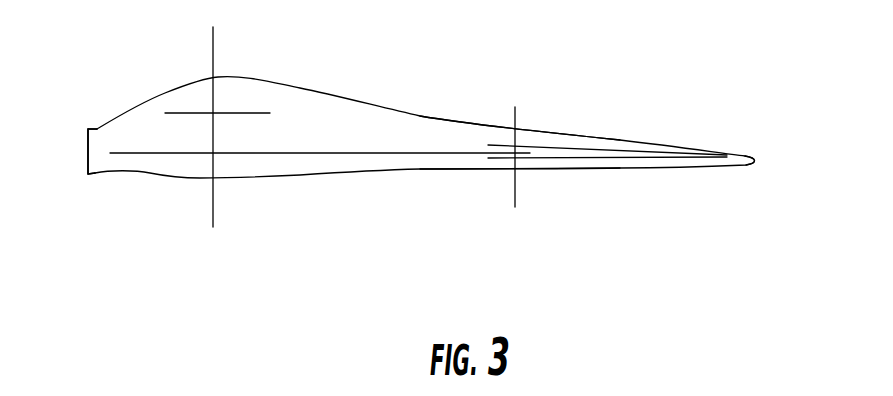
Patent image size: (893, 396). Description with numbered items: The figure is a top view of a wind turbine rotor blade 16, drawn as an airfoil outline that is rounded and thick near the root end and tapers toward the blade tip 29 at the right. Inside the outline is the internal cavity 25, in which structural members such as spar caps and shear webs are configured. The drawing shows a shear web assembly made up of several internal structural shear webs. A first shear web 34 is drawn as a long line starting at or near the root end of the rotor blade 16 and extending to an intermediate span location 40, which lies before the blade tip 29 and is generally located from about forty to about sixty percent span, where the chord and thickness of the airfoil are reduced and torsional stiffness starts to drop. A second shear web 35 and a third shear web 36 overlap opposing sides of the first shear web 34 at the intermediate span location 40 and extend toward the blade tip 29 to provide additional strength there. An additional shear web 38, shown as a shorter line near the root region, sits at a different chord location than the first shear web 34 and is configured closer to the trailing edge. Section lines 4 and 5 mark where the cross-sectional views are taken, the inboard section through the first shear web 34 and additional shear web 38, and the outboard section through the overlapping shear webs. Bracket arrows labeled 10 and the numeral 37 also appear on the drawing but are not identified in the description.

The blade 10 is at (190, 258).
The rotor blade 16 is at (430, 84).
The internal cavity 25 is at (452, 135).
The blade tip 29 is at (737, 163).
The first shear web 34 is at (303, 150).
The second shear web 35 is at (682, 158).
The third shear web 36 is at (628, 148).
The root 37 is at (98, 128).
The additional shear web 38 is at (173, 113).
The intermediate span location 40 is at (497, 178).
The section line 4- 4 is at (213, 27).
The section line 5- 5 is at (515, 107).